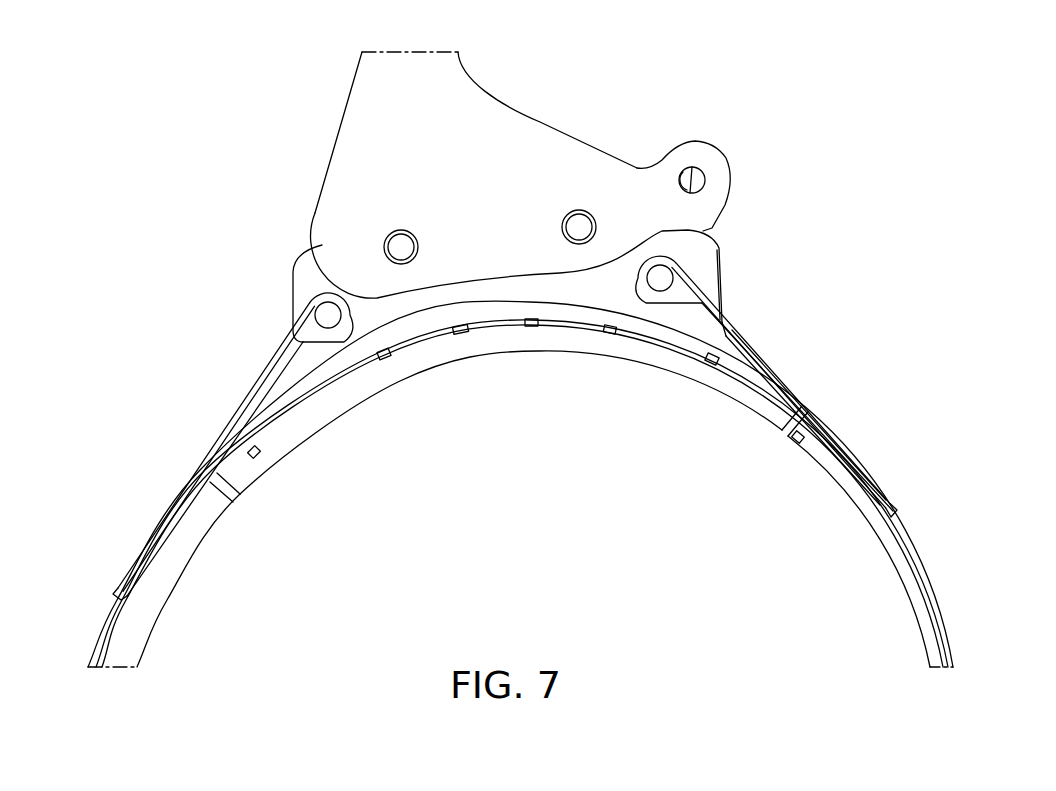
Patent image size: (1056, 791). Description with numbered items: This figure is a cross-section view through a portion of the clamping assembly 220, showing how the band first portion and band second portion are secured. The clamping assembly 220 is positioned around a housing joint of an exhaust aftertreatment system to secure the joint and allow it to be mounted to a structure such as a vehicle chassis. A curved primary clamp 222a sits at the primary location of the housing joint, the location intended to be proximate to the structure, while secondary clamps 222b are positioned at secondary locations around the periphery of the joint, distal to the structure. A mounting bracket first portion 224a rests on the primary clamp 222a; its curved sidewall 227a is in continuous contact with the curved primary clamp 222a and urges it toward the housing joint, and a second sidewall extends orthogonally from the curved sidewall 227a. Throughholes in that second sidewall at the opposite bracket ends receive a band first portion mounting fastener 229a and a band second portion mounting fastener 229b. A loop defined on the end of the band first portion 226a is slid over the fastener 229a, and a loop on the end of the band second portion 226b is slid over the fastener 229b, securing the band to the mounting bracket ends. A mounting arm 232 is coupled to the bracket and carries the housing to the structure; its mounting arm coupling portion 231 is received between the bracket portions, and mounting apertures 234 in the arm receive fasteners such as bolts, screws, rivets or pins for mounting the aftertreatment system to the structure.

The clamping assembly 220 is at (772, 71).
The primary clamp 222a is at (573, 345).
The secondary clamps 222b is at (183, 538).
The mounting bracket first portion 224a is at (707, 255).
The band first portion 226a is at (753, 343).
The band second portion 226b is at (258, 370).
The curved sidewall 227a is at (463, 318).
The band first portion mounting fastener 229a is at (668, 277).
The band second portion mounting fastener 229b is at (322, 308).
The mounting arm coupling portion 231 is at (342, 237).
The mounting arm 232 is at (468, 100).
The mounting apertures 234 is at (699, 181).